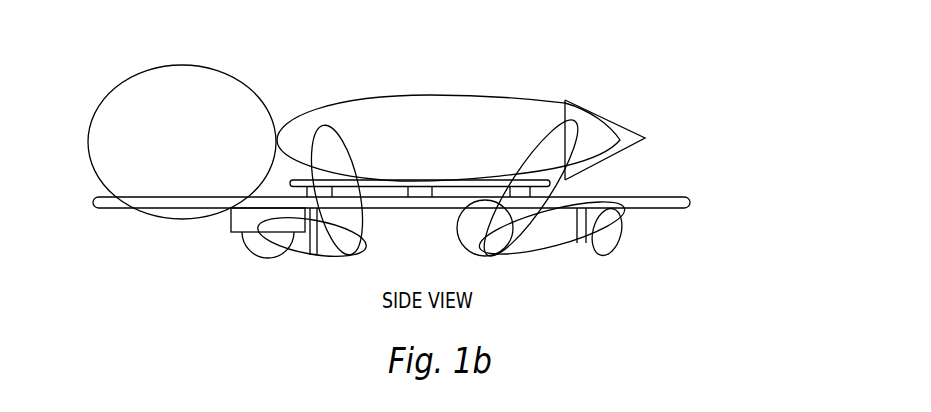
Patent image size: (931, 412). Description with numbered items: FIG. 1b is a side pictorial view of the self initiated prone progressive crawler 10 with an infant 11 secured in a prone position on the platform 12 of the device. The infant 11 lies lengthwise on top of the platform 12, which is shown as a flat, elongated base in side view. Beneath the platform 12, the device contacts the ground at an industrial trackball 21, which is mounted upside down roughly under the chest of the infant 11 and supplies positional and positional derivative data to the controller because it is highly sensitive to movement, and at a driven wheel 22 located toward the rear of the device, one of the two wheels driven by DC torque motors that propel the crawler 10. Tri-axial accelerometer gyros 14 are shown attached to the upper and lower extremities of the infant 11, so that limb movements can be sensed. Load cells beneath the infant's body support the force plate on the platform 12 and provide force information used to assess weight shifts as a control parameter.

The self initiated prone progressive crawler 10 is at (433, 164).
The infant 11 is at (495, 122).
The platform 12 is at (674, 197).
The tri-axial accelerometer gyros 14 is at (420, 180).
The industrial trackball 21 is at (253, 254).
The wheel 22 is at (493, 257).